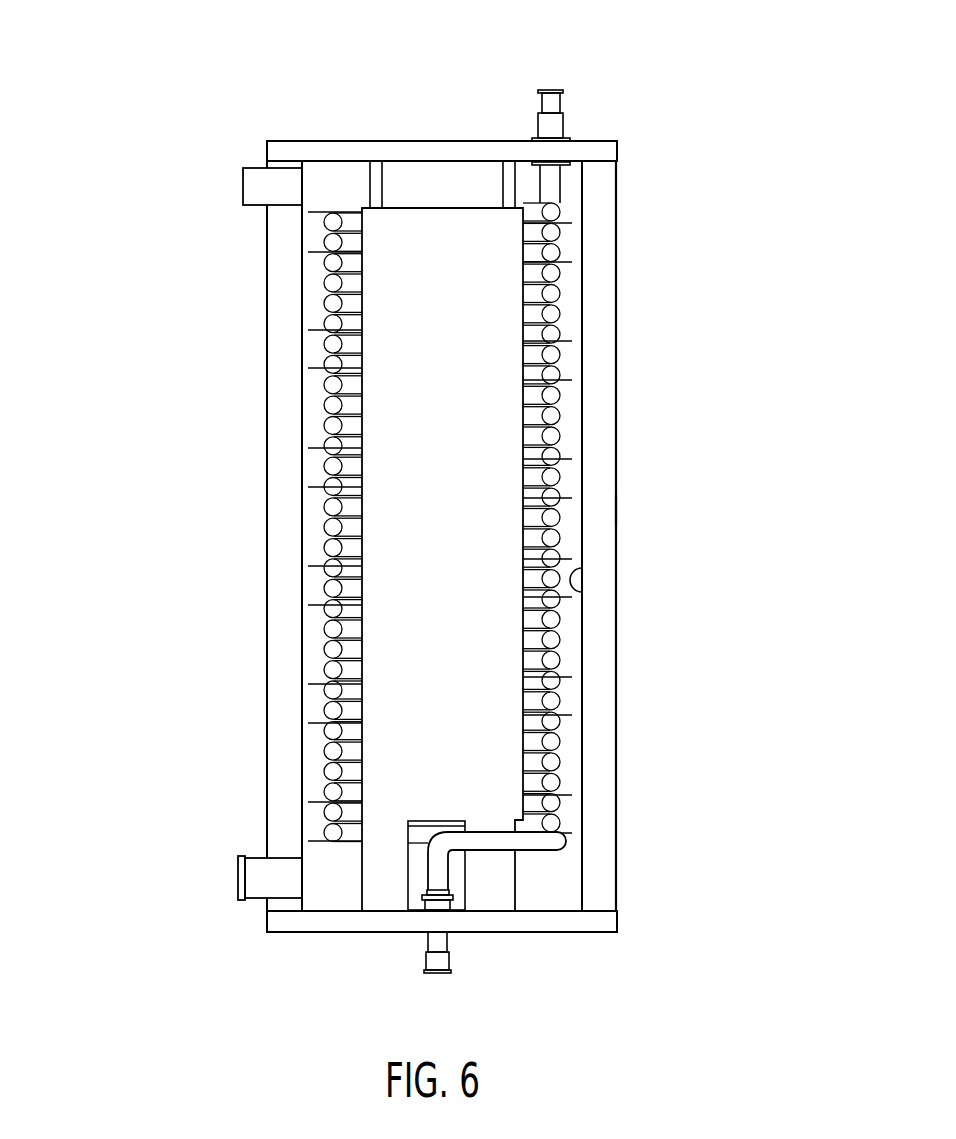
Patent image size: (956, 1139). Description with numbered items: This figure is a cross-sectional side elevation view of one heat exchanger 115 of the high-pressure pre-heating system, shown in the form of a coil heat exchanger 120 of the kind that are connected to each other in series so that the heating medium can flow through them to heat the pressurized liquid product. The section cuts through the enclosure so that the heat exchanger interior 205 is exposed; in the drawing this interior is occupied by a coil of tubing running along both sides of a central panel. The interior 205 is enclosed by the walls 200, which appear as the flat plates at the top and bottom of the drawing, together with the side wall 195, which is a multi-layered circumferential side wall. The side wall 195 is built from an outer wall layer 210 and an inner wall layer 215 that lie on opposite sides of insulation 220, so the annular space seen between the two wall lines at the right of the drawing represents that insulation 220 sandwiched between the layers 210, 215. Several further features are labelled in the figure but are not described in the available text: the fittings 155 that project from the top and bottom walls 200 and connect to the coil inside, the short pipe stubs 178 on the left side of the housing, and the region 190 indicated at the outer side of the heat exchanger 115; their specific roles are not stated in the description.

The heat exchanger 115 is at (227, 63).
The coil heat exchanger 120 is at (238, 118).
The fitting 155 is at (580, 103).
The port 178 is at (253, 218).
The outer wall 190 is at (648, 260).
The side wall 195 is at (633, 328).
The wall 200 is at (423, 105).
The heat exchanger interior 205 is at (310, 477).
The outer wall layer 210 is at (615, 509).
The inner wall layer 215 is at (582, 593).
The insulation 220 is at (600, 642).